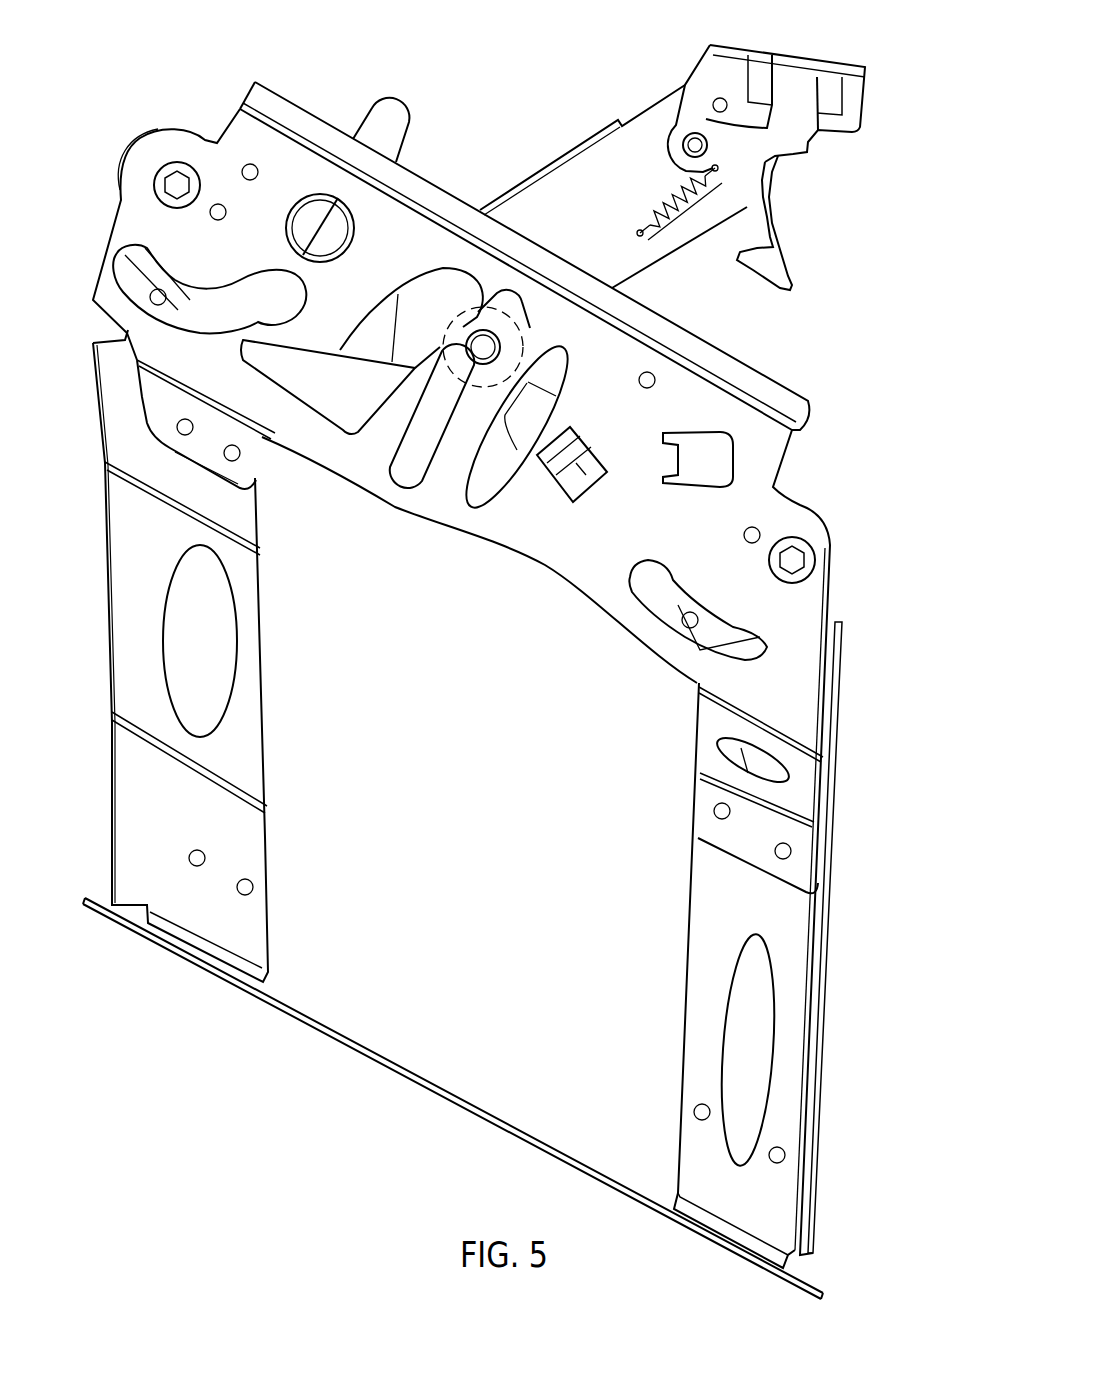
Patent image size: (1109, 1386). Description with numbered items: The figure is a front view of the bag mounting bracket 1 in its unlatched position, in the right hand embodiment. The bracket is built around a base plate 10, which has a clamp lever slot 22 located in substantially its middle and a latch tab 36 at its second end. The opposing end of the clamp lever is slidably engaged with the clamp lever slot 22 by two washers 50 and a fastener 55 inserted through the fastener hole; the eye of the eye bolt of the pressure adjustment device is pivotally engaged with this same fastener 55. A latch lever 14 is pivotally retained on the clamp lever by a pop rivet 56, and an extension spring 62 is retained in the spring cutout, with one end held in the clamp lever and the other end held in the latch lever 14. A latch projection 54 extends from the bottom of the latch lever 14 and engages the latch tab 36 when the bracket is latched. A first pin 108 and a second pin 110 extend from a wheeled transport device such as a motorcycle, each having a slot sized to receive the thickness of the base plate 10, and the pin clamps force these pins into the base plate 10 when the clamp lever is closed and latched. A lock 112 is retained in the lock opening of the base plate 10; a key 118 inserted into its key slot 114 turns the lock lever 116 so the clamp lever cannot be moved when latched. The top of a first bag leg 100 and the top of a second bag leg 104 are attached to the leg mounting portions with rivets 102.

The bag mounting bracket 1 is at (910, 64).
The base plate 10 is at (852, 380).
The latch lever 14 is at (785, 177).
The clamp lever slot 22 is at (403, 482).
The latch tab 36 is at (738, 455).
The washers 50 is at (487, 375).
The latch projection 54 is at (770, 210).
The fastener 55 is at (470, 365).
The pop rivet 56 is at (688, 130).
The extension spring 62 is at (680, 222).
The first bag leg 100 is at (111, 652).
The rivets 102 is at (242, 457).
The second bag leg 104 is at (690, 960).
The first pin 108 is at (157, 188).
The second pin 110 is at (816, 562).
The lock 112 is at (367, 213).
The key slot 114 is at (316, 222).
The lock lever 116 is at (388, 100).
The key 118 is at (340, 204).